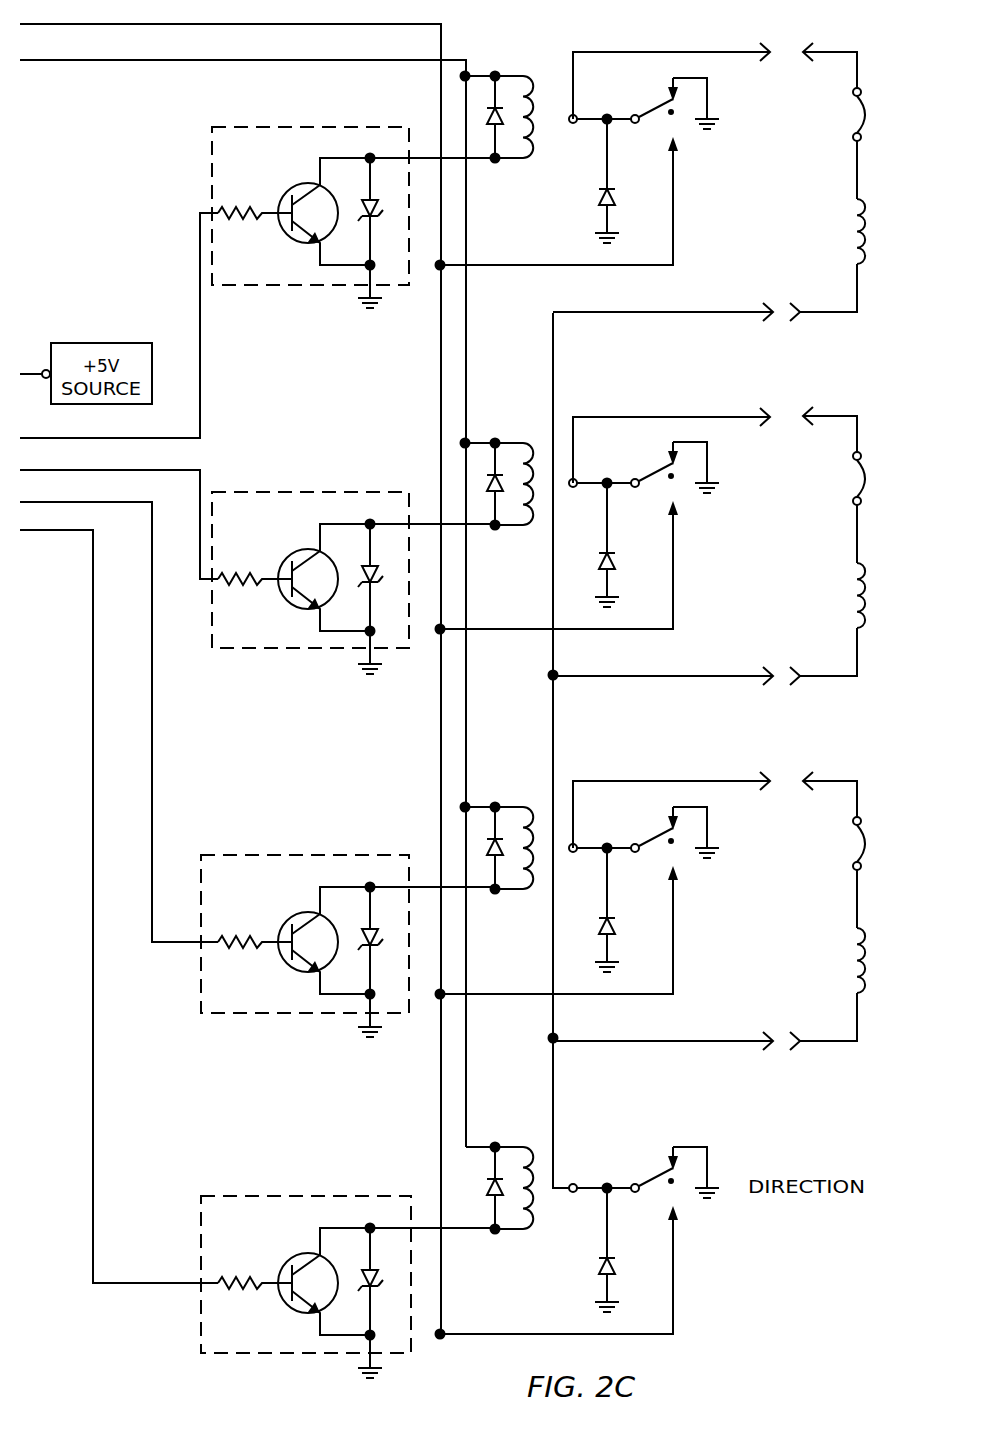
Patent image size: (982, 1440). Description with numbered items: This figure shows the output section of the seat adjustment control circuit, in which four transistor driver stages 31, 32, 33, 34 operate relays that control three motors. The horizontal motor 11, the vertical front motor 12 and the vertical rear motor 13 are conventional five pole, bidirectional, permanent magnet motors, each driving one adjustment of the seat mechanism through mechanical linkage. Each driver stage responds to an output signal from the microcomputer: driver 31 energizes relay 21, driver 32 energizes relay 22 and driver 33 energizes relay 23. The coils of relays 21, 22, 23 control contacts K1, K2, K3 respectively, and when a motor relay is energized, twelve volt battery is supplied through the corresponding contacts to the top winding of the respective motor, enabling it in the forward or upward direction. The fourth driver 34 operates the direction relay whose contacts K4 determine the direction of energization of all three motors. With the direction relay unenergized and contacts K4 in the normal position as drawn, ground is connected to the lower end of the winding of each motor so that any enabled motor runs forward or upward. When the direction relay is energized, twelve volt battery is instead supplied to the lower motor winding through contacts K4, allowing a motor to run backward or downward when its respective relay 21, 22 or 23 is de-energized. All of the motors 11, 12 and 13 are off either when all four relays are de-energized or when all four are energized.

The horizontal motor 11 is at (857, 233).
The vertical front motor 12 is at (852, 598).
The vertical rear motor 13 is at (859, 960).
The relay 21 is at (538, 160).
The relay 22 is at (536, 525).
The relay 23 is at (536, 890).
The transistor driver stage 31 is at (286, 127).
The transistor driver stage 32 is at (292, 492).
The transistor driver stage 33 is at (290, 855).
The transistor driver stage 34 is at (291, 1196).
The relay contacts K1 is at (656, 104).
The relay contacts K2 is at (654, 468).
The relay contacts K3 is at (654, 833).
The direction relay contacts K4 is at (654, 1173).